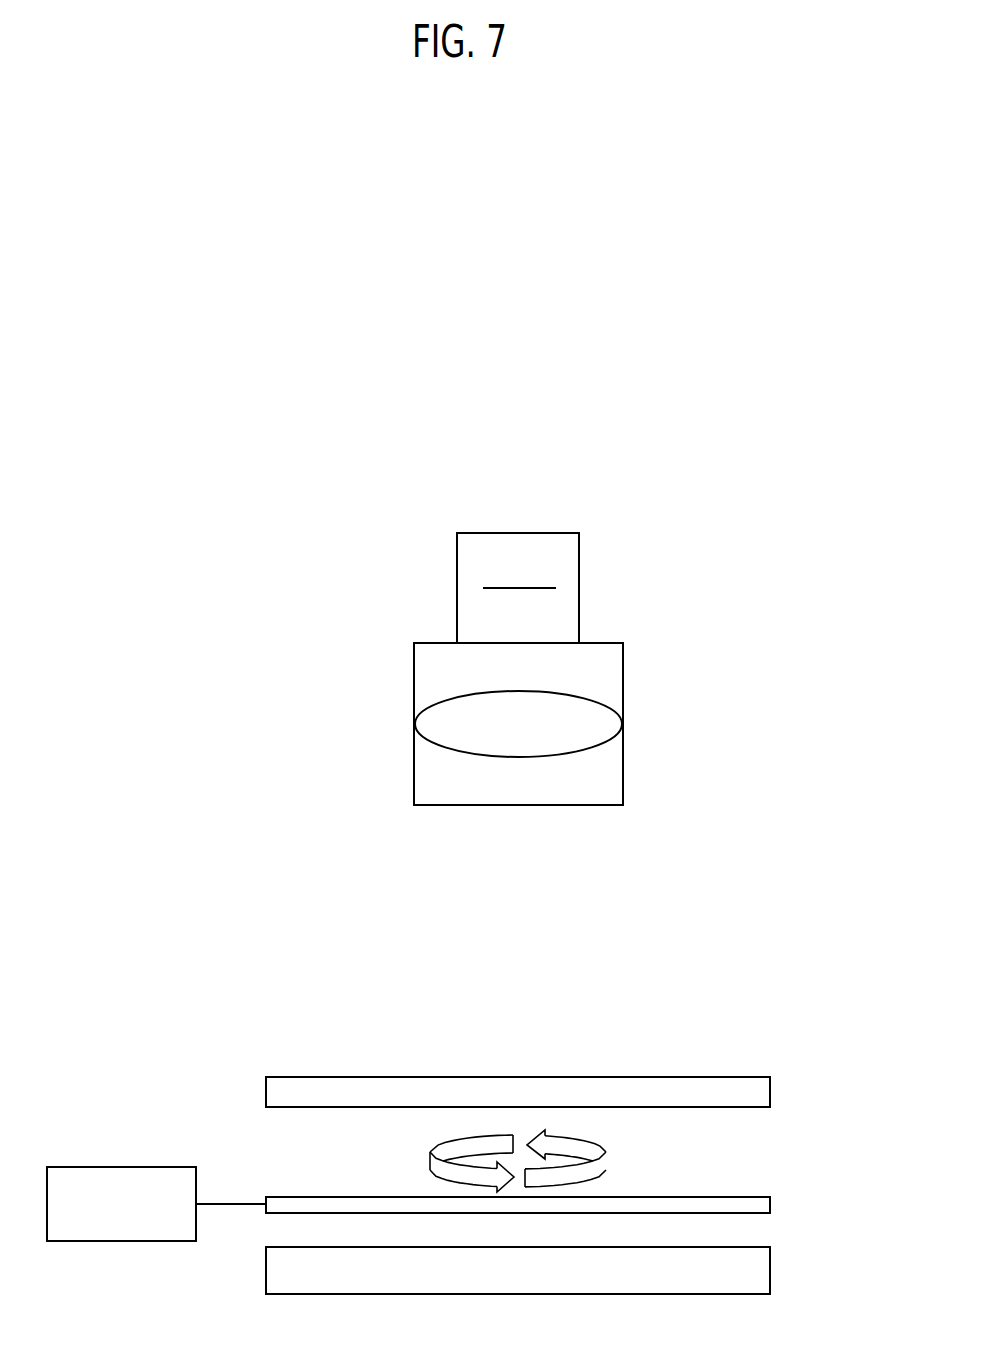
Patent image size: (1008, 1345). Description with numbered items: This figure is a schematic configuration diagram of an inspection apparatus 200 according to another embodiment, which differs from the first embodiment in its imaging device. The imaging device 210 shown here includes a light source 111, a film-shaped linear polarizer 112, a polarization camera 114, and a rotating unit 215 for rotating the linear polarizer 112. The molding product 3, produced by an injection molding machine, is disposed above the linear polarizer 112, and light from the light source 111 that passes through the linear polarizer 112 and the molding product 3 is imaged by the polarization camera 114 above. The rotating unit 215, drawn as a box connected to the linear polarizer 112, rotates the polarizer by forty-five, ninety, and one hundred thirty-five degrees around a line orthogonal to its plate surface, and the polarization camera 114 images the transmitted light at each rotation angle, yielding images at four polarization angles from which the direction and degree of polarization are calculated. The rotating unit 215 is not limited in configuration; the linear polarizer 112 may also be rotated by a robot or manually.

The inspection apparatus 200 is at (168, 293).
The imaging device 210 is at (308, 431).
The polarization camera 114 is at (579, 580).
The molding product 3 is at (770, 1088).
The linear polarizer 112 is at (770, 1202).
The light source 111 is at (770, 1267).
The rotating unit 215 is at (123, 1167).